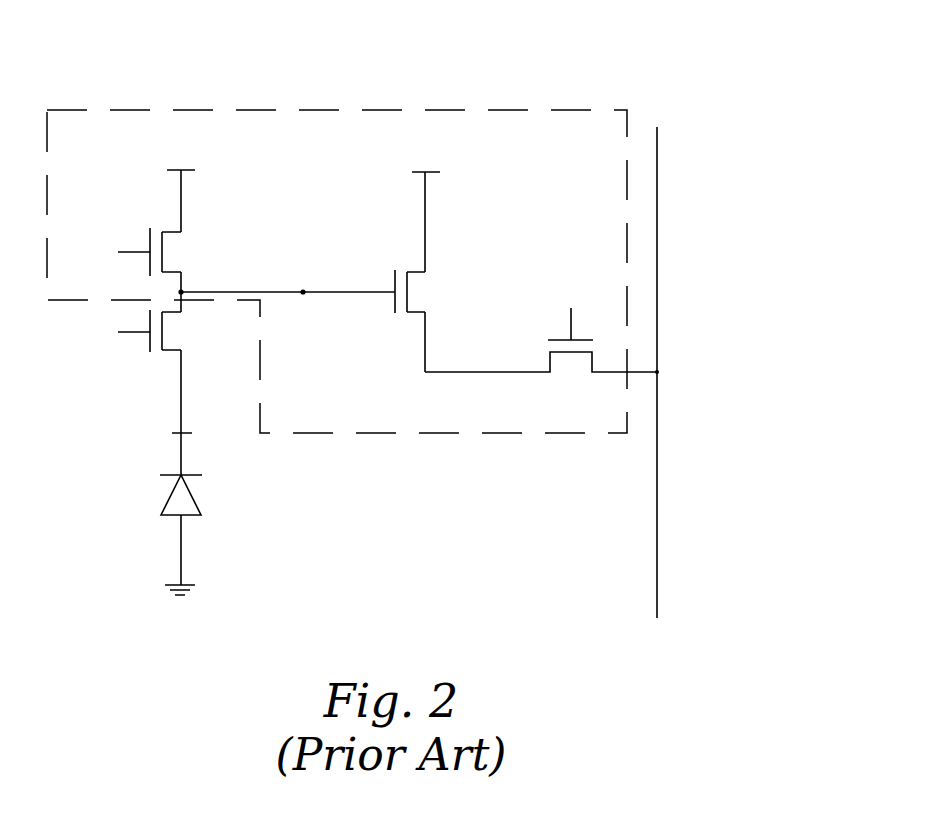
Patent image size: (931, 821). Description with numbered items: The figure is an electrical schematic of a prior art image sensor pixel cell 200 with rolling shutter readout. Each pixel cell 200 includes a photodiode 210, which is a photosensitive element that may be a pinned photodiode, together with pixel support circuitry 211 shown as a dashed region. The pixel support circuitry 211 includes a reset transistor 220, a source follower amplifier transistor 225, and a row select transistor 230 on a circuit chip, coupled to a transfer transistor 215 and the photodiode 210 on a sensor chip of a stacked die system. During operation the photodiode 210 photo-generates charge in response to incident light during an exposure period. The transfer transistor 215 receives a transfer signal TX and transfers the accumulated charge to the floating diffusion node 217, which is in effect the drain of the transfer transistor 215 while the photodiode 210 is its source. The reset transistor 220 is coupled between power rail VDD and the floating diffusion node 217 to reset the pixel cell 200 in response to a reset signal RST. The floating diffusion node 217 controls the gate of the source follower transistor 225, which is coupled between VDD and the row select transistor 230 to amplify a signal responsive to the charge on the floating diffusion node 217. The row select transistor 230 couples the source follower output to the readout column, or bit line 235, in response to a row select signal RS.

The image sensor pixel cell 200 is at (706, 77).
The pixel support circuitry 211 is at (110, 148).
The photodiode 210 is at (152, 535).
The transfer transistor 215 is at (173, 383).
The floating diffusion node 217 is at (303, 292).
The reset transistor 220 is at (173, 260).
The source follower amplifier transistor 225 is at (435, 310).
The row select transistor 230 is at (541, 343).
The bit line 235 is at (657, 530).